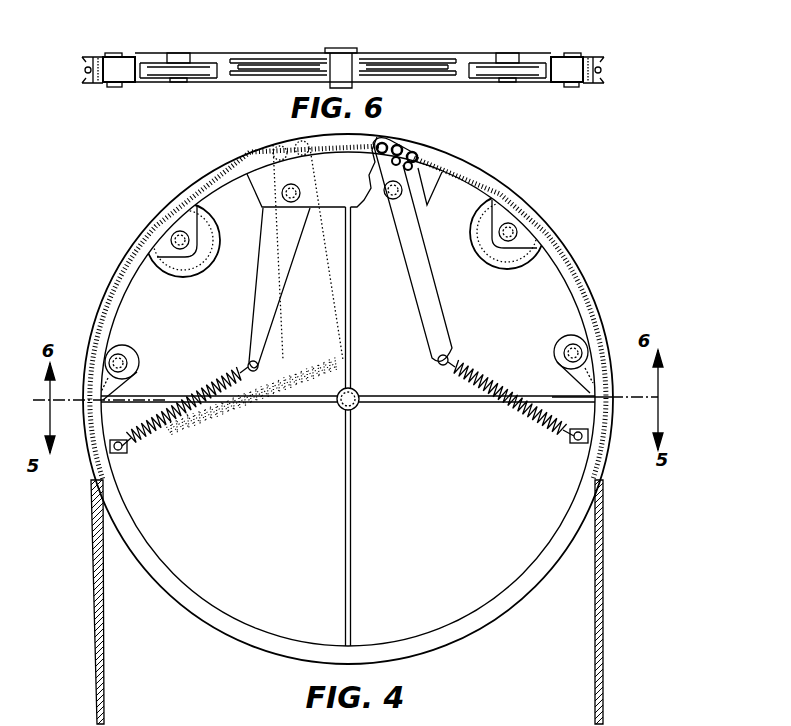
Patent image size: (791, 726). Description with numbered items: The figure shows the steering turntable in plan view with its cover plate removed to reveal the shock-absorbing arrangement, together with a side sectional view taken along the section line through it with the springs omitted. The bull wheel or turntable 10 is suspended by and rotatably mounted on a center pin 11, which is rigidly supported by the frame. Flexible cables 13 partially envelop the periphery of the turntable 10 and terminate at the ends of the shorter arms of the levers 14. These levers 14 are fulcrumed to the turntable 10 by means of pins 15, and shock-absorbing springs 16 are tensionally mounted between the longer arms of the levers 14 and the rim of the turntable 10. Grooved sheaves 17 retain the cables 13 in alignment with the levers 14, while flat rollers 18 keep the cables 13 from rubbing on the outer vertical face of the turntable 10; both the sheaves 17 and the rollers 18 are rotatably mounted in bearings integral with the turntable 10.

In FIG. 6, the turntable 10 is at (92, 80).
In FIG. 4, the turntable 10 is at (282, 657).
In FIG. 6, the center pin 11 is at (346, 49).
In FIG. 4, the center pin 11 is at (357, 408).
In FIG. 6, the flexible cables 13 is at (605, 66).
In FIG. 4, the flexible cables 13 is at (97, 657).
In FIG. 6, the levers 14 is at (266, 70).
In FIG. 4, the levers 14 is at (252, 328).
In FIG. 6, the pins 15 is at (275, 58).
In FIG. 4, the pins 15 is at (392, 198).
In FIG. 4, the shock-absorbing springs 16 is at (180, 396).
In FIG. 6, the grooved sheaves 17 is at (206, 64).
In FIG. 4, the grooved sheaves 17 is at (221, 246).
In FIG. 6, the flat rollers 18 is at (124, 57).
In FIG. 4, the flat rollers 18 is at (133, 348).